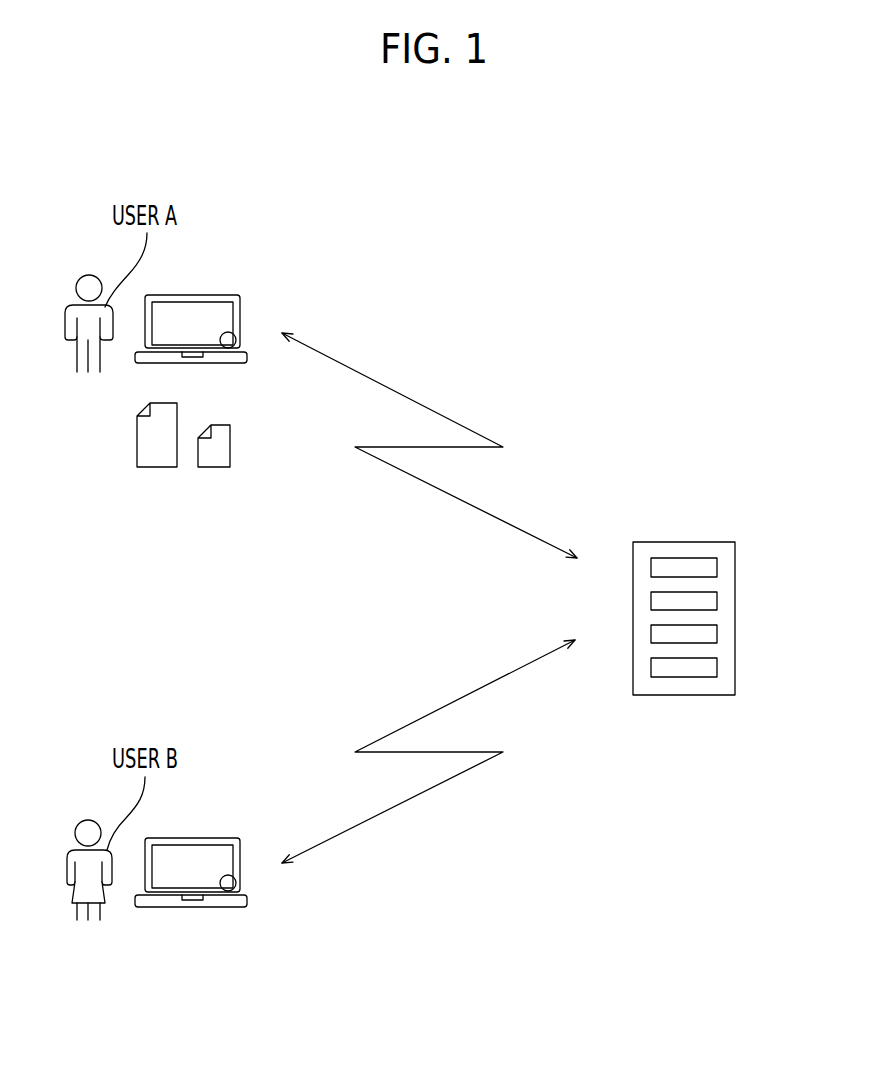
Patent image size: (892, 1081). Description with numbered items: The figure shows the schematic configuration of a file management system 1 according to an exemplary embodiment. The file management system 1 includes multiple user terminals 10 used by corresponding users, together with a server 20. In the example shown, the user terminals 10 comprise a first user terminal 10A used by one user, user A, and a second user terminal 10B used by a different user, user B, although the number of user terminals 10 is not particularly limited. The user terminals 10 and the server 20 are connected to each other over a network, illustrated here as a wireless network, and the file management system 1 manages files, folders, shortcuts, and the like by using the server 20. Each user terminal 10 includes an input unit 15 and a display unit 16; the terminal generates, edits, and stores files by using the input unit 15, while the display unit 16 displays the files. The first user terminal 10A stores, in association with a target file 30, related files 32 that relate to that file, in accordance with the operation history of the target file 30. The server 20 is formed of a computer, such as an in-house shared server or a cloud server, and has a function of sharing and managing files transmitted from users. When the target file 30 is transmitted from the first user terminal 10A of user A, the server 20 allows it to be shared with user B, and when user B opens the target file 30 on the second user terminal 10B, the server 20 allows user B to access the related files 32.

The file management system 1 is at (478, 250).
The user terminals 10 is at (217, 550).
The first user terminal 10A is at (215, 263).
The second user terminal 10B is at (195, 803).
The input unit 15 is at (236, 337).
The display unit 16 is at (222, 305).
The server 20 is at (745, 545).
The target file 30 is at (152, 468).
The related files 32 is at (208, 470).